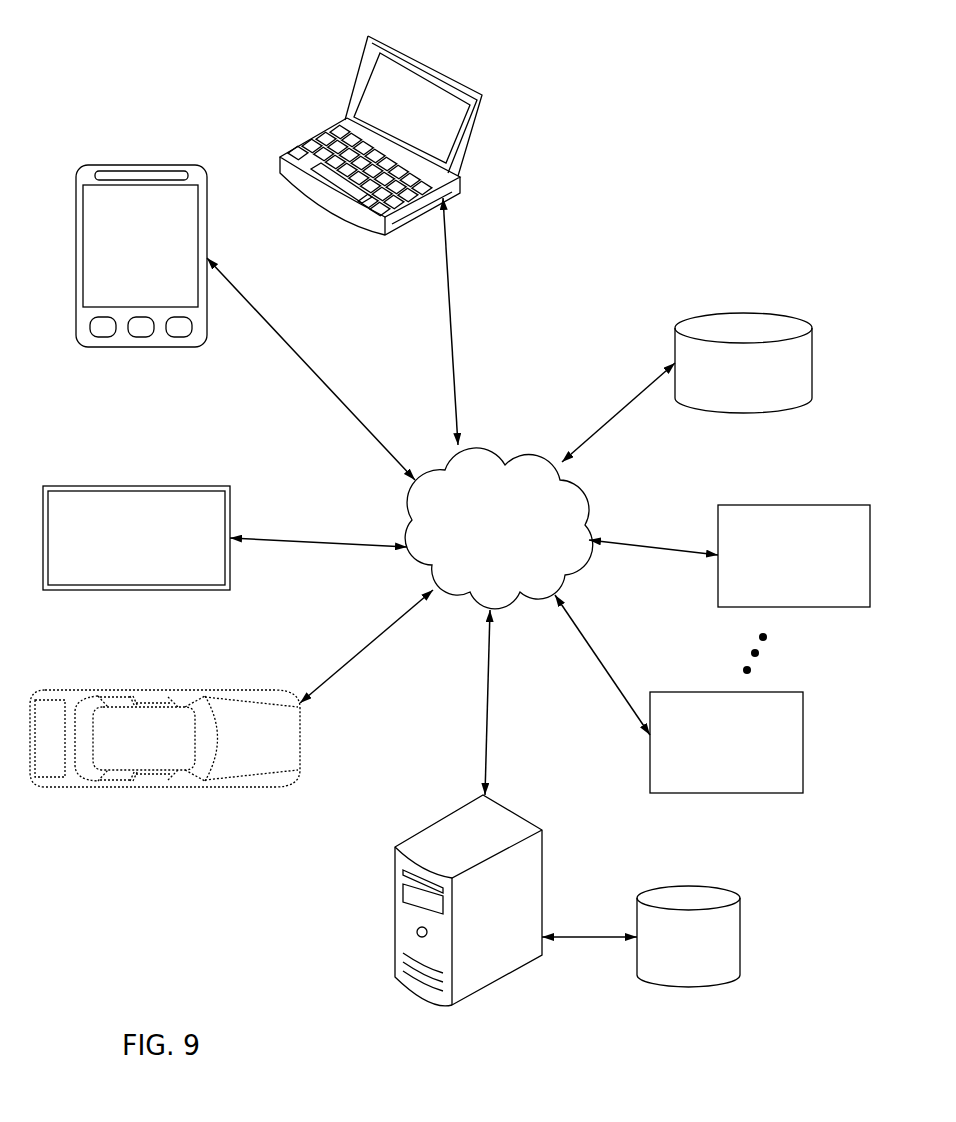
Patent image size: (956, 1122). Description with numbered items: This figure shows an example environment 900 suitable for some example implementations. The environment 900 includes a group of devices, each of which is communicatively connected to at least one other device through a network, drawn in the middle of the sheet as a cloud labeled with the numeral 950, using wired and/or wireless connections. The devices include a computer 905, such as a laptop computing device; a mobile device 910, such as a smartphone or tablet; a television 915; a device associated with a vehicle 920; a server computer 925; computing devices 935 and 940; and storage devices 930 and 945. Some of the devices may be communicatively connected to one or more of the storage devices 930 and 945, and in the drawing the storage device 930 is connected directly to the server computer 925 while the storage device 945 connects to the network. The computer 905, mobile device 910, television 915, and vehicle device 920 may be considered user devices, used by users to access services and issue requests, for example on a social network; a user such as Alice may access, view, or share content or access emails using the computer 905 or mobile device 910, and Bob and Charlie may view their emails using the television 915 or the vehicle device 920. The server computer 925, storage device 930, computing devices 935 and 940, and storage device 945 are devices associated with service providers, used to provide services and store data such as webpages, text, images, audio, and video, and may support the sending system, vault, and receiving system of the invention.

The environment 900 is at (160, 40).
The computer 905 is at (401, 123).
The mobile device 910 is at (129, 258).
The television 915 is at (118, 544).
The device associated with a vehicle 920 is at (129, 749).
The server computer 925 is at (476, 928).
The storage device 930 is at (677, 952).
The computing device 935 is at (712, 758).
The computing device 940 is at (779, 555).
The storage device 945 is at (729, 386).
The network 950 is at (481, 557).